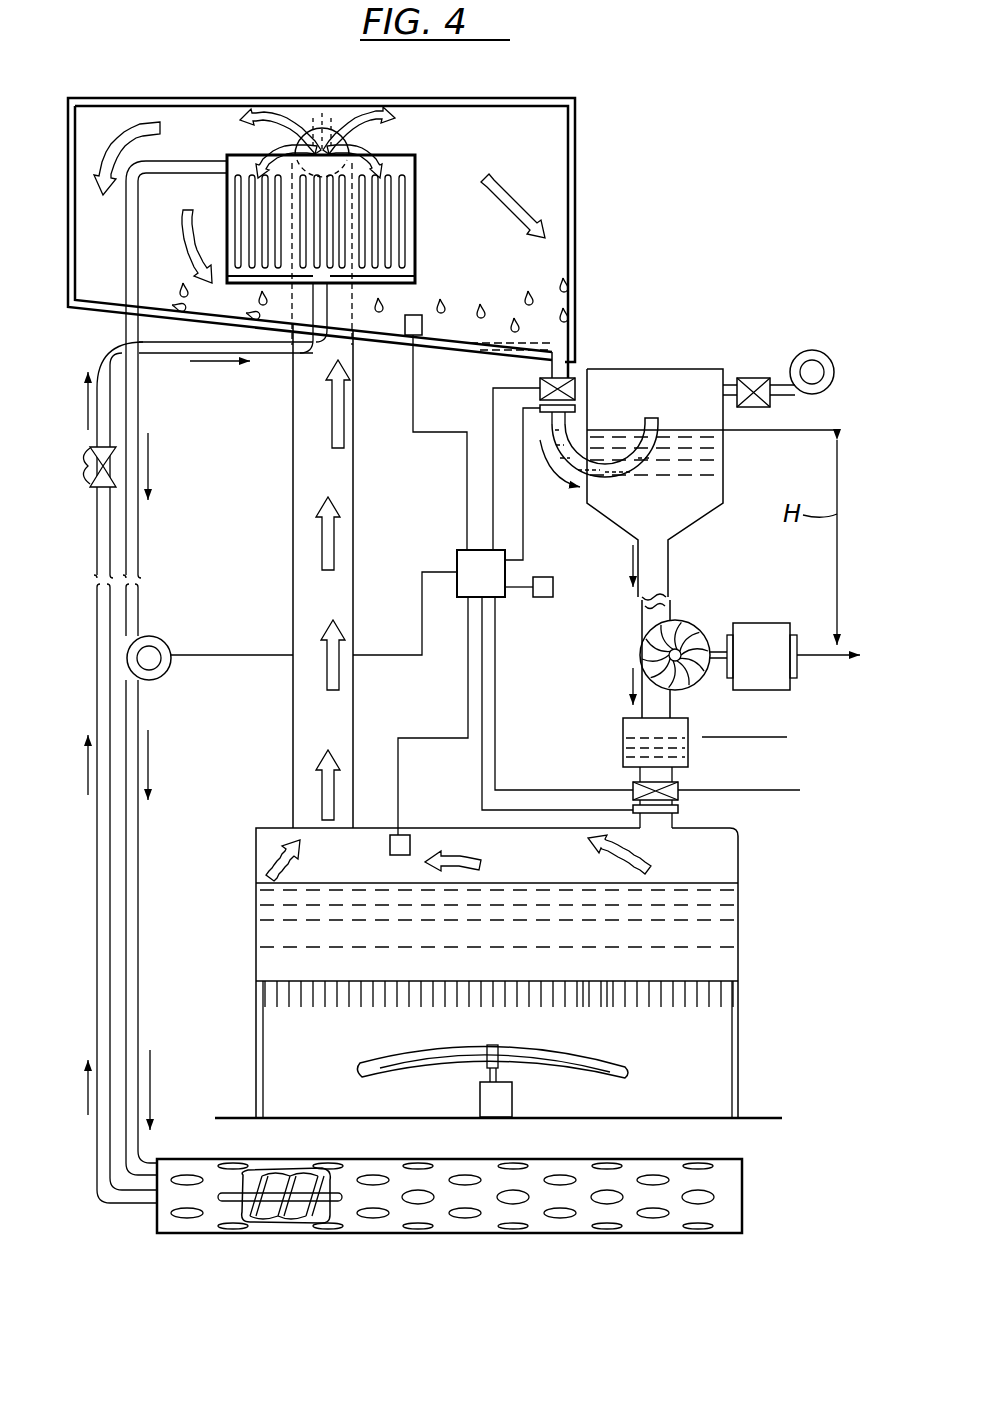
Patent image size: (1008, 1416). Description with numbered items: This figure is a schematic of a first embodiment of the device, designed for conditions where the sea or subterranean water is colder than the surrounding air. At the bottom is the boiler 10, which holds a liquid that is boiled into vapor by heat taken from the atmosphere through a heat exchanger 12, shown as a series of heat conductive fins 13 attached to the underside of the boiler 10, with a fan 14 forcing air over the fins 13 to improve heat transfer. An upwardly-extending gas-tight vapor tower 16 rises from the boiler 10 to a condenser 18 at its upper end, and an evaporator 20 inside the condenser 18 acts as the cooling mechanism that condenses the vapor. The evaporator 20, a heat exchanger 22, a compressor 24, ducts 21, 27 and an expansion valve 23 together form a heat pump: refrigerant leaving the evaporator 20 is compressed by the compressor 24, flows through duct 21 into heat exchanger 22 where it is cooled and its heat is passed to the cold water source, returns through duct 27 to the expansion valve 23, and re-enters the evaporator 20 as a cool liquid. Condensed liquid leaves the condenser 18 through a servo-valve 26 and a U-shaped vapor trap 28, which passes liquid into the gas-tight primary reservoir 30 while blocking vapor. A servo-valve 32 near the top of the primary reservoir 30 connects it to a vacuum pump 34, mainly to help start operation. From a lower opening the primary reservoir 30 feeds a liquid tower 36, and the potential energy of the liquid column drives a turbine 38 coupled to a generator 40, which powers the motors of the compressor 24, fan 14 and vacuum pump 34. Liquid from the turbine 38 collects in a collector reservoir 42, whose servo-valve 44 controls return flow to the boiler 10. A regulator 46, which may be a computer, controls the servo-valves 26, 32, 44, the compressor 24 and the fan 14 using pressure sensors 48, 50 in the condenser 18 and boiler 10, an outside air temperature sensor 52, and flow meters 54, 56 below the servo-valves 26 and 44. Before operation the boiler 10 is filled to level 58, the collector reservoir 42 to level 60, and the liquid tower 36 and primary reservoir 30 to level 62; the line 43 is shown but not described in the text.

The boiler 10 is at (740, 918).
The heat exchanger 12 is at (452, 1014).
The heat conductive fins 13 is at (585, 1003).
The fan 14 is at (385, 1065).
The vapor tower 16 is at (354, 497).
The condenser 18 is at (576, 160).
The evaporator 20 is at (415, 240).
The duct 21 is at (138, 615).
The heat exchanger 22 is at (742, 1162).
The expansion valve 23 is at (108, 466).
The compressor 24 is at (165, 676).
The servo-valve 26 is at (574, 378).
The duct 27 is at (97, 615).
The vapor trap 28 is at (598, 478).
The primary reservoir 30 is at (665, 369).
The servo-valve 32 is at (758, 378).
The vacuum pump 34 is at (814, 350).
The liquid tower 36 is at (668, 580).
The turbine 38 is at (641, 645).
The generator 40 is at (752, 623).
The collector reservoir 42 is at (623, 725).
The signal line 43 is at (780, 790).
The servo-valve 44 is at (633, 785).
The regulator 46 is at (500, 588).
The pressure sensor 48 is at (418, 315).
The pressure sensor 50 is at (402, 835).
The outside air temperature sensor 52 is at (543, 577).
The flow meter 54 is at (576, 407).
The flow meter 56 is at (665, 815).
The level 58 is at (580, 883).
The level 60 is at (787, 737).
The level 62 is at (832, 430).